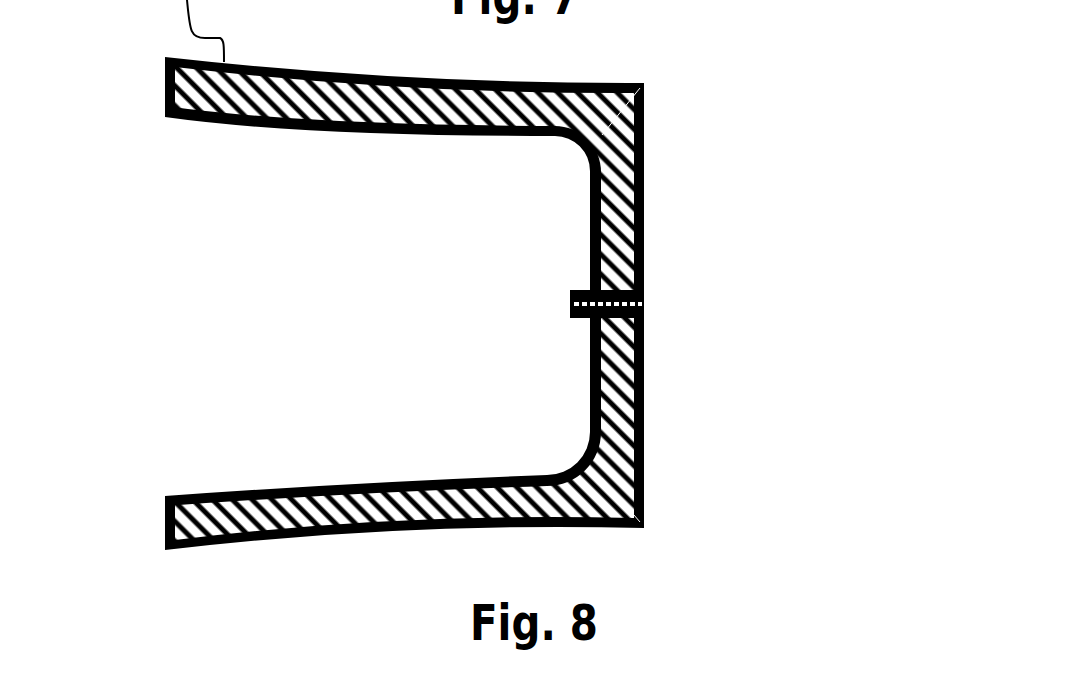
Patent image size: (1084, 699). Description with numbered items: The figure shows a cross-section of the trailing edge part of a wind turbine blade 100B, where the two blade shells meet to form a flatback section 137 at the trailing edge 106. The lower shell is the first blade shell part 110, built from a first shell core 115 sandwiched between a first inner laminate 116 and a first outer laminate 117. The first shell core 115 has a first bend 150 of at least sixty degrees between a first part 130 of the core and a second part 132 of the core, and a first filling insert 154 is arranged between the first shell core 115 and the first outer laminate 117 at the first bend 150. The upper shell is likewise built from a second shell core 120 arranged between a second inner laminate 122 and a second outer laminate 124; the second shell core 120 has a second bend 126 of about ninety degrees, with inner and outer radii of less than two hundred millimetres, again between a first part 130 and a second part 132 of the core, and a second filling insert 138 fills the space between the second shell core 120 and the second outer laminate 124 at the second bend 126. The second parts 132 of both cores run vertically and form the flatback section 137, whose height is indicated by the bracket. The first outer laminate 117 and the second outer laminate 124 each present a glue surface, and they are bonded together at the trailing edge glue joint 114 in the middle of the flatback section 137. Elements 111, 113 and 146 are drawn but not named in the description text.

The wind turbine blade 100B is at (150, 291).
The trailing edge 106 is at (645, 357).
The first blade shell part 110 is at (203, 543).
The inner skin 111 is at (373, 530).
The outer skin 113 is at (361, 80).
The trailing edge glue joint 114 is at (570, 304).
The first shell core 115 is at (168, 533).
The first inner laminate 116 is at (289, 480).
The first outer laminate 117 is at (275, 538).
The second shell core 120 is at (165, 78).
The second inner laminate 122 is at (265, 125).
The second outer laminate 124 is at (297, 72).
The second bend 126 is at (574, 146).
The first part of shell core 130 is at (467, 133).
The second part of shell core 132 is at (645, 212).
The flatback section 137 is at (835, 92).
The second filling insert 138 is at (645, 102).
The fastener 146 is at (645, 300).
The first bend 150 is at (572, 462).
The first filling insert 154 is at (639, 524).